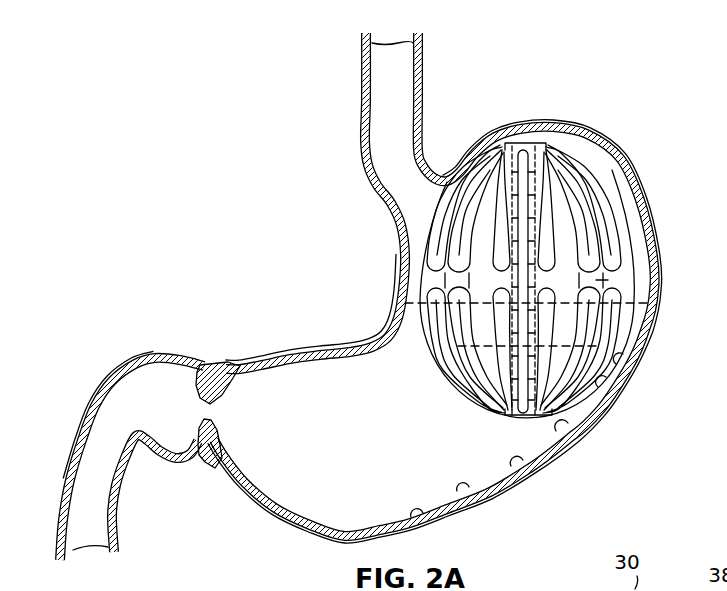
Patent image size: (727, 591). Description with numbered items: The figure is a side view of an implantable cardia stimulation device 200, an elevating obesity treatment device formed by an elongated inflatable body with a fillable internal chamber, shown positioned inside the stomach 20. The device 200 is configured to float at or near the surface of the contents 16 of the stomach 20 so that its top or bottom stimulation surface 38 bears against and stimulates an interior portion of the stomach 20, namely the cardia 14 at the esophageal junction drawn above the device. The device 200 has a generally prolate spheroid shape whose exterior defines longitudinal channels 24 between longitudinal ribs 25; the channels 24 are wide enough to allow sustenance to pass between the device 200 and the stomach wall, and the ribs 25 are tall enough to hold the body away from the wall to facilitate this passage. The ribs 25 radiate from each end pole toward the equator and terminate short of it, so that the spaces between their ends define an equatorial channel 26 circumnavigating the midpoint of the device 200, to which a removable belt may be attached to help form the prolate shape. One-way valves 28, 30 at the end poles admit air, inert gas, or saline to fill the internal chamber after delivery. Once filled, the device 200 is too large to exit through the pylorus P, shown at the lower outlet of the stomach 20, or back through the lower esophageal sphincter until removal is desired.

The cardia 14 is at (462, 160).
The contents of the stomach 16 is at (467, 453).
The stomach 20 is at (319, 352).
The longitudinal channels 24 is at (565, 217).
The longitudinal ribs 25 is at (596, 240).
The channel 26 is at (608, 280).
The one-way valve 28 is at (534, 416).
The one-way valve 30 is at (527, 140).
The stimulation surface 38 is at (498, 148).
The implantable cardia stimulation device 200 is at (604, 183).
The pylorus P is at (203, 463).